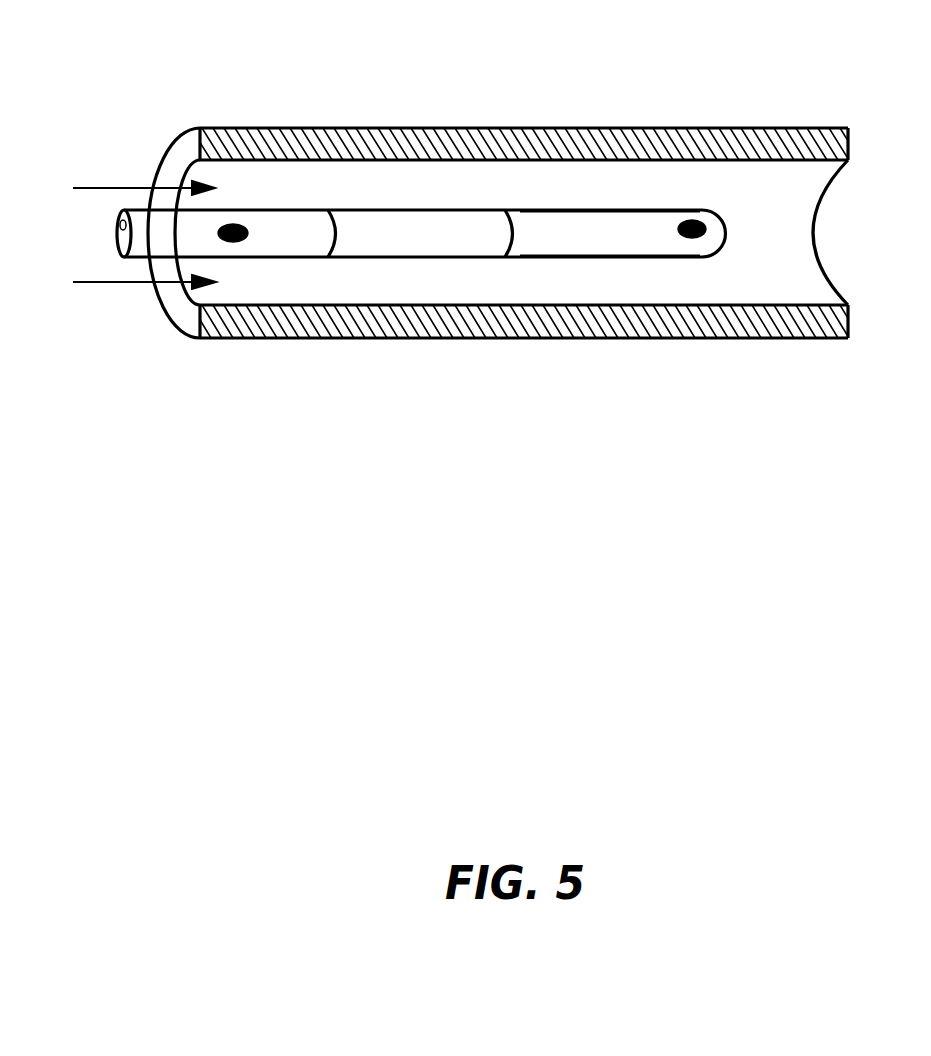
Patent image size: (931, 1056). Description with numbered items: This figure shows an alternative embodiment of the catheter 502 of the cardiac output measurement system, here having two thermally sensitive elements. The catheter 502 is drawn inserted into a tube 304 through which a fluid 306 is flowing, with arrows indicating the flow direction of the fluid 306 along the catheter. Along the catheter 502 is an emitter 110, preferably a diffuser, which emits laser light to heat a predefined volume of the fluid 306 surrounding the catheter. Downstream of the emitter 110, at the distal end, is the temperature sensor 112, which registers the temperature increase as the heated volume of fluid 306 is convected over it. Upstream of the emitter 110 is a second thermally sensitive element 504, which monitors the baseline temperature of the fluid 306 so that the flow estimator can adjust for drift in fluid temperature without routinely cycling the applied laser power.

The tube 304 is at (258, 140).
The fluid 306 is at (102, 188).
The emitter 110 is at (452, 223).
The catheter 502 is at (630, 228).
The second thermally sensitive element 504 is at (240, 240).
The temperature sensor 112 is at (692, 238).